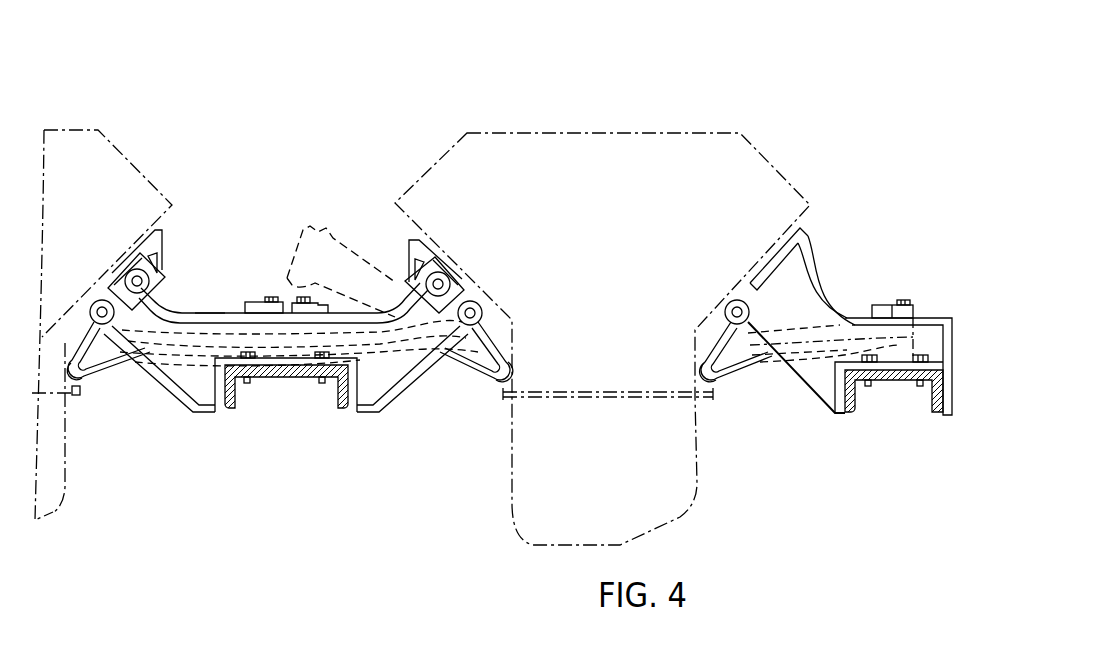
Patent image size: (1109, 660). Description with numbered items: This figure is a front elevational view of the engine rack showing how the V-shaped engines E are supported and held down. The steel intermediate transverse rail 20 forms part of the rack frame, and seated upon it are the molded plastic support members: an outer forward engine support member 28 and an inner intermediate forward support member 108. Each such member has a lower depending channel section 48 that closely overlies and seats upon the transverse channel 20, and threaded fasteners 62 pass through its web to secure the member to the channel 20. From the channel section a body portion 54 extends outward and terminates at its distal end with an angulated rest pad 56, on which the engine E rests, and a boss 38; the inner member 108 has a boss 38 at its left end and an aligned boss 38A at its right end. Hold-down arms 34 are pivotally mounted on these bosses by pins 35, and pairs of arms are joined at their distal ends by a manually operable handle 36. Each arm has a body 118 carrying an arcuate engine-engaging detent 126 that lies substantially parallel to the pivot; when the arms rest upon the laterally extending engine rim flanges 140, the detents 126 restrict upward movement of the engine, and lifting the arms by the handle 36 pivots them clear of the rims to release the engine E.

The V-shaped engine E is at (86, 130).
The intermediate transverse rail 20 is at (290, 378).
The outer forward engine support member 28 is at (829, 279).
The hold-down arm 34 is at (331, 249).
The pin 35 is at (100, 300).
The handle 36 is at (291, 302).
The boss 38 is at (94, 304).
The boss 38A is at (482, 316).
The channel section 48 is at (820, 388).
The body portion 54 is at (168, 298).
The angulated rest pad 56 is at (770, 263).
The threaded fastener 62 is at (247, 383).
The inner intermediate forward support member 108 is at (203, 302).
The body 118 is at (472, 345).
The engine-engaging detent 126 is at (78, 373).
The engine rim flange 140 is at (503, 399).